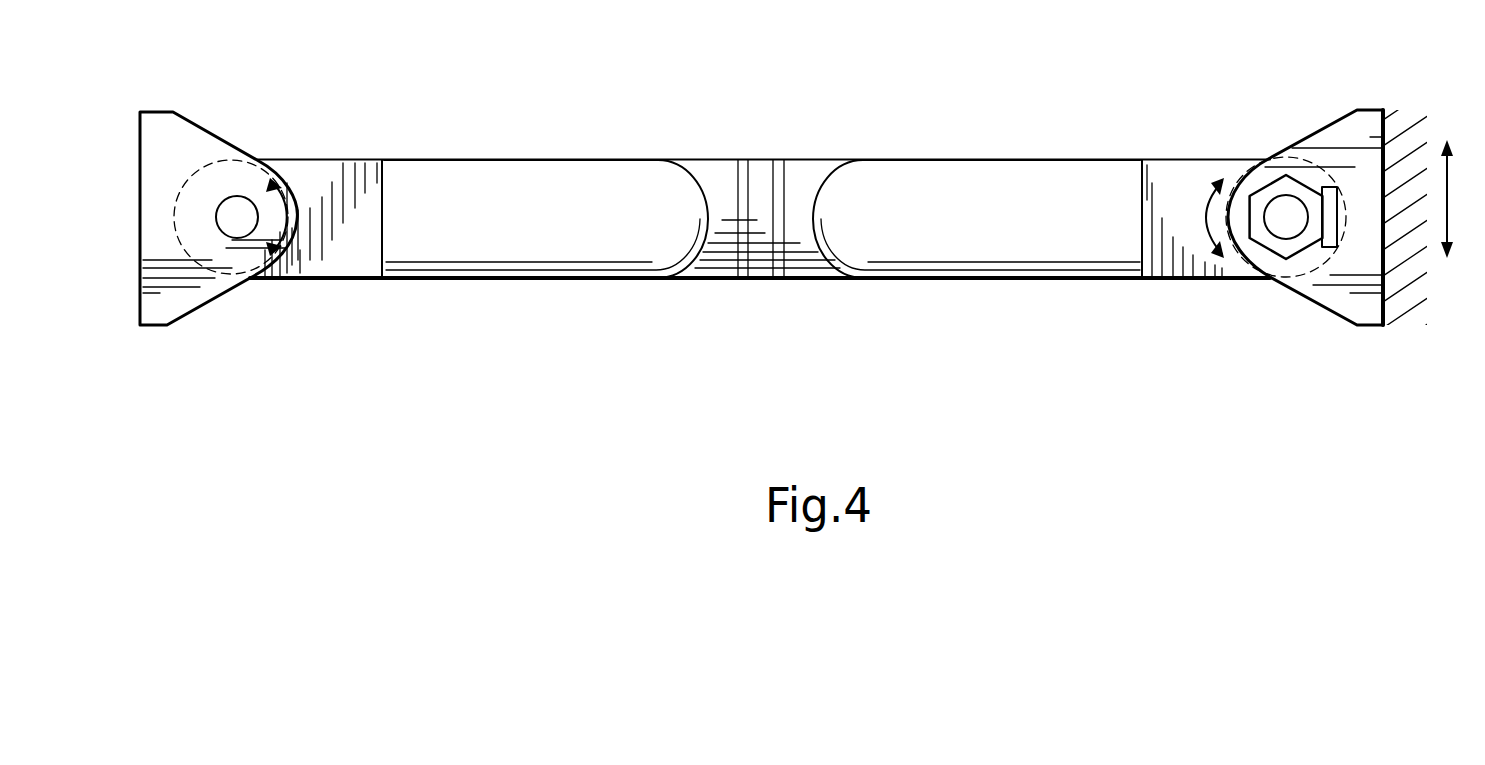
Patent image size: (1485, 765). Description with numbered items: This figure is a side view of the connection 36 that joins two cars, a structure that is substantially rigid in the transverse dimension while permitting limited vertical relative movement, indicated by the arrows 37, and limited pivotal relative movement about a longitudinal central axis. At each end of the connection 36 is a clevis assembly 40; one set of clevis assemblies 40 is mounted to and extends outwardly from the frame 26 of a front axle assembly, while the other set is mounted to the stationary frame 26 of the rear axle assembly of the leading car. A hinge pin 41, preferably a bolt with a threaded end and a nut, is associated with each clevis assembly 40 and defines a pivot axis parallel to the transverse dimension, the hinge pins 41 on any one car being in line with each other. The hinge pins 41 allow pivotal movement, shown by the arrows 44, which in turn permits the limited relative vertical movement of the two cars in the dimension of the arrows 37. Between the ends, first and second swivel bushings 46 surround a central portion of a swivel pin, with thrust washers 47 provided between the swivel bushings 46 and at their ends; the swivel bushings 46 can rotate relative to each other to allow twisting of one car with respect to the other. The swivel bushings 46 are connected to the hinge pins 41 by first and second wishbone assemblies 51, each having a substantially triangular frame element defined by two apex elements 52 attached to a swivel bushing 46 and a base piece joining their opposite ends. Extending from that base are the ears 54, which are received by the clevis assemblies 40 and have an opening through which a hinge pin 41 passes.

The frame 26 is at (1404, 116).
The connection 36 is at (870, 132).
The arrows 37 is at (1450, 172).
The clevis assemblies 40 is at (175, 118).
The hinge pin 41 is at (238, 228).
The arrows 44 is at (288, 204).
The swivel bushings 46 is at (702, 165).
The thrust washers 47 is at (780, 165).
The wishbone assemblies 51 is at (492, 286).
The apex elements 52 is at (516, 207).
The ears 54 is at (355, 257).